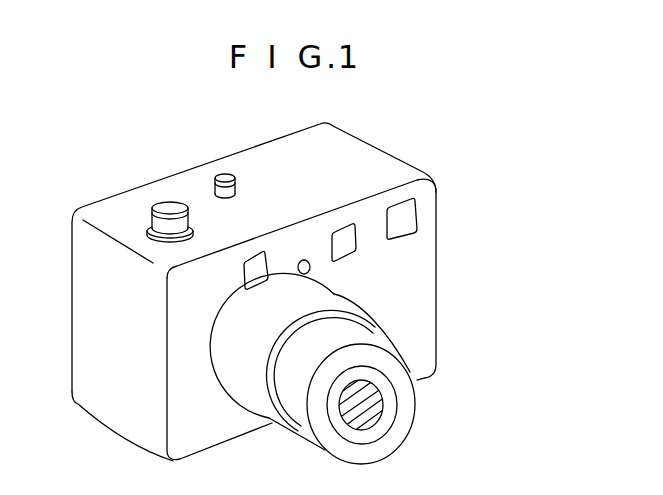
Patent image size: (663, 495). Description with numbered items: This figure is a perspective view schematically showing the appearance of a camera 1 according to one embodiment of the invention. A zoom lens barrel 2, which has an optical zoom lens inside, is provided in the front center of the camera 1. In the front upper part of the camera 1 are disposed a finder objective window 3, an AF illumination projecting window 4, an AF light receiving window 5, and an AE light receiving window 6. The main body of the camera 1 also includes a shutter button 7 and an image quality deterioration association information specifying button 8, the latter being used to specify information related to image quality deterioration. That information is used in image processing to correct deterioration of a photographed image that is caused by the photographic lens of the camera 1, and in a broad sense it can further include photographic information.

The camera 1 is at (463, 174).
The zoom lens barrel 2 is at (392, 393).
The finder objective window 3 is at (410, 220).
The AF illumination projecting window 4 is at (348, 243).
The AF light receiving window 5 is at (260, 267).
The AE light receiving window 6 is at (310, 273).
The shutter button 7 is at (167, 209).
The image quality deterioration association information specifying button 8 is at (223, 178).